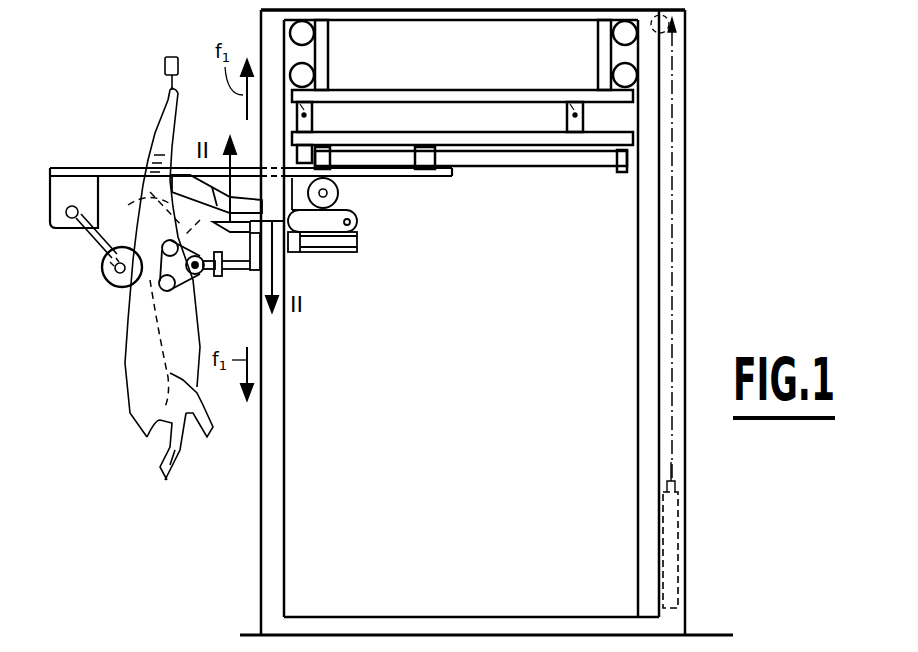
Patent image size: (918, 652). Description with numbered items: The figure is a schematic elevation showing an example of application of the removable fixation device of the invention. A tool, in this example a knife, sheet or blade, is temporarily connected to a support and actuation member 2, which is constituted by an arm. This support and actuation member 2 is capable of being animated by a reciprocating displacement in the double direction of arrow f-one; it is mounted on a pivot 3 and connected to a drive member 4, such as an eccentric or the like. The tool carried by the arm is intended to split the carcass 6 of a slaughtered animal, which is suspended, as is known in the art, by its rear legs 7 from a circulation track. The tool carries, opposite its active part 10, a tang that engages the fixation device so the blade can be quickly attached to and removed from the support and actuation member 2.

The support and actuation member 2 is at (325, 225).
The pivot 3 is at (352, 222).
The drive member 4 is at (338, 193).
The carcass 6 is at (137, 403).
The rear legs 7 is at (152, 142).
The active part 10 is at (103, 240).